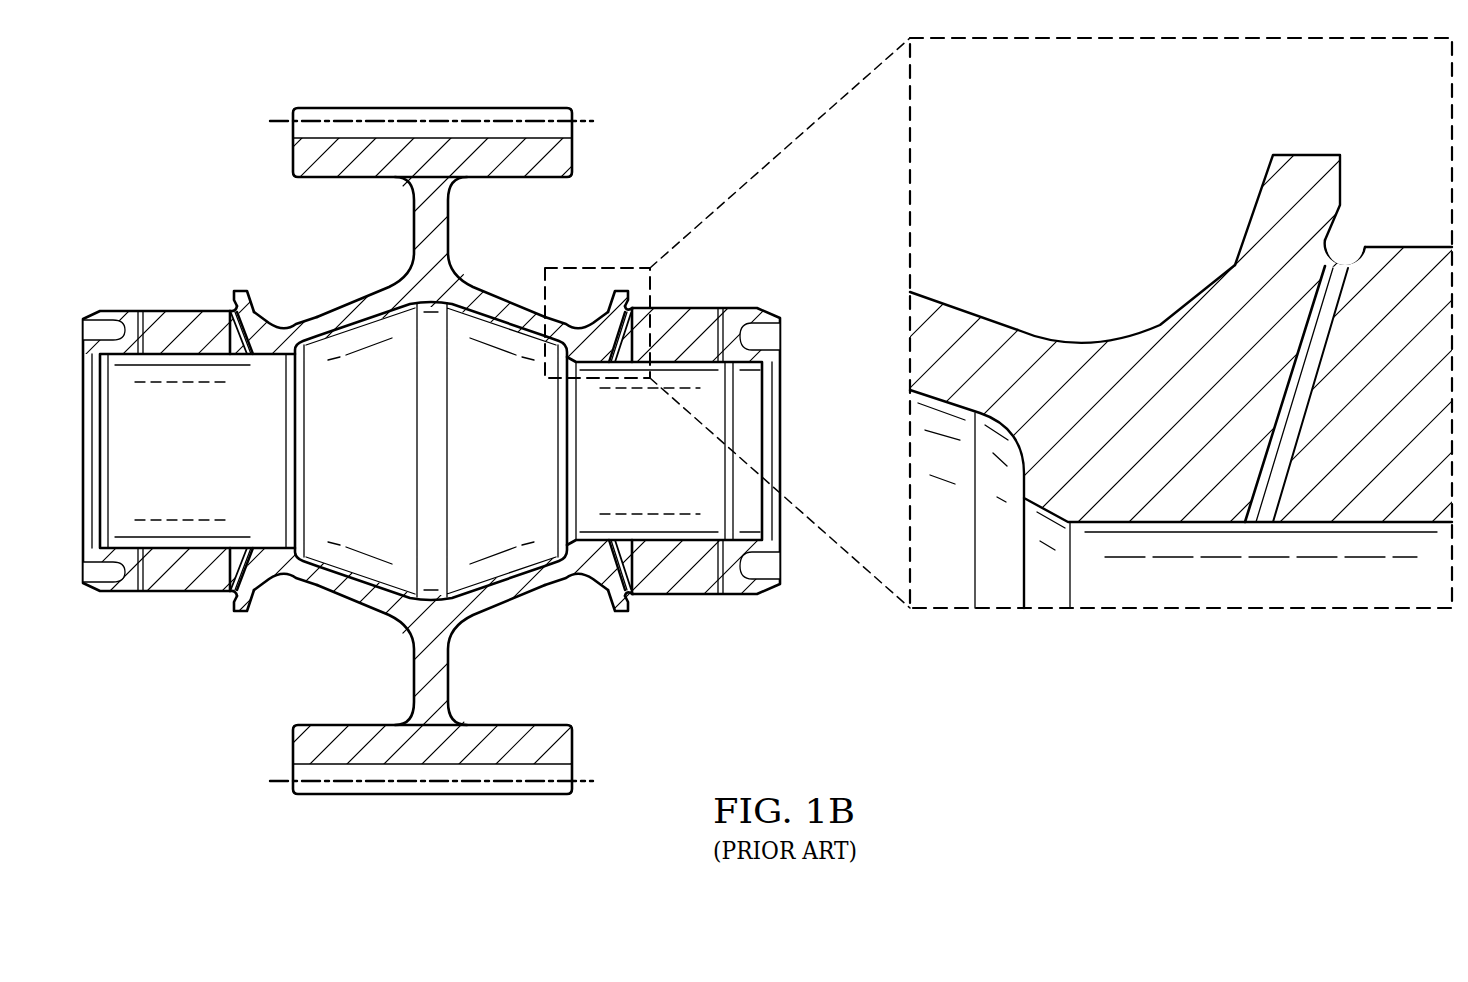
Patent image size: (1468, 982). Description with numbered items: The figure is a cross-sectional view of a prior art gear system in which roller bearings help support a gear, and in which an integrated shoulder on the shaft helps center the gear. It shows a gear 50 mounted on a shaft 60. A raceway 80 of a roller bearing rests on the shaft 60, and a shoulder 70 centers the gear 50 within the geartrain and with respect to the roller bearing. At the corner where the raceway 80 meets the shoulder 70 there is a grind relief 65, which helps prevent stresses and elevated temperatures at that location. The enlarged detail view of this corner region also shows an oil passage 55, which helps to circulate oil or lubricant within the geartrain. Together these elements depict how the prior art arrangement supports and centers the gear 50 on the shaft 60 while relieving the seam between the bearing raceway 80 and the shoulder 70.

The gear 50 is at (432, 108).
The shaft 60 is at (186, 310).
The shoulder 70 is at (1306, 155).
The raceway 80 is at (1412, 247).
The grind relief 65 is at (1332, 242).
The oil passage 55 is at (1288, 462).